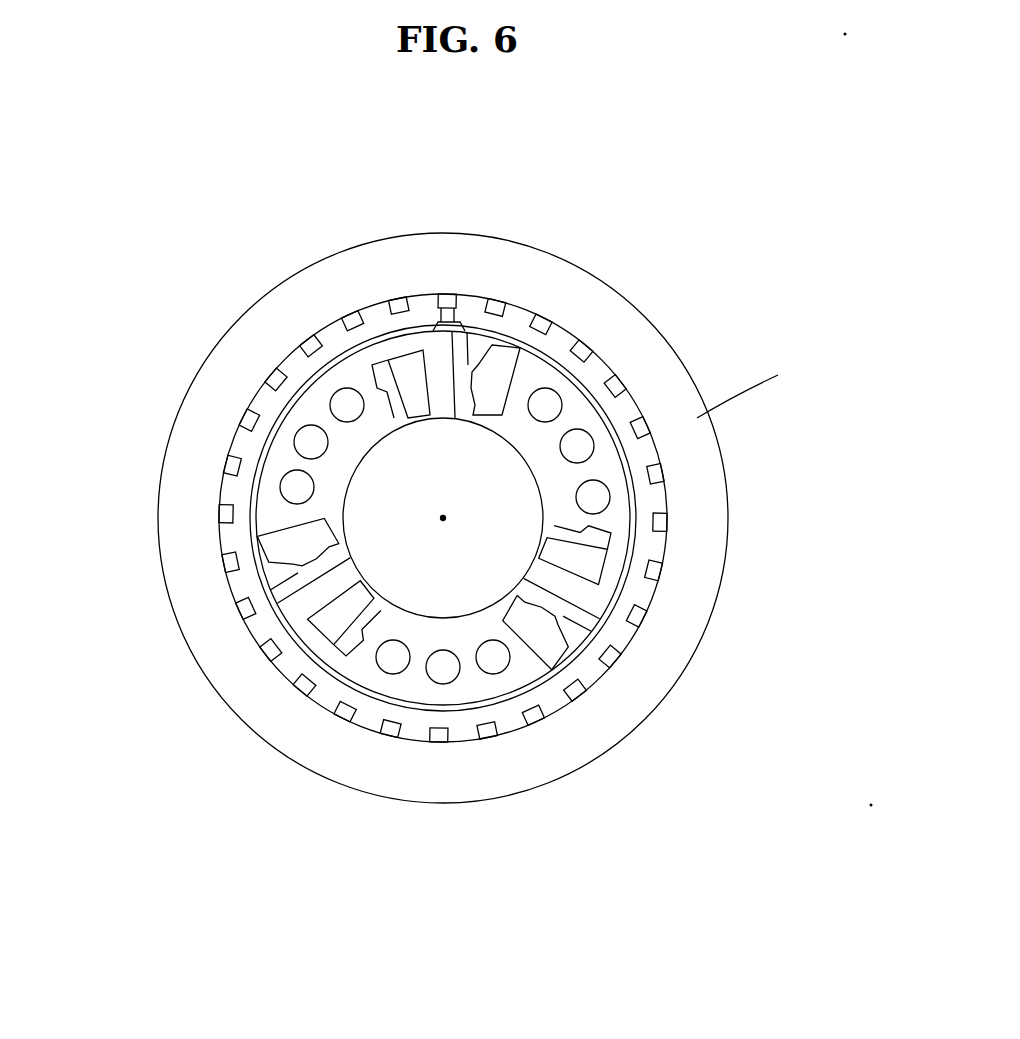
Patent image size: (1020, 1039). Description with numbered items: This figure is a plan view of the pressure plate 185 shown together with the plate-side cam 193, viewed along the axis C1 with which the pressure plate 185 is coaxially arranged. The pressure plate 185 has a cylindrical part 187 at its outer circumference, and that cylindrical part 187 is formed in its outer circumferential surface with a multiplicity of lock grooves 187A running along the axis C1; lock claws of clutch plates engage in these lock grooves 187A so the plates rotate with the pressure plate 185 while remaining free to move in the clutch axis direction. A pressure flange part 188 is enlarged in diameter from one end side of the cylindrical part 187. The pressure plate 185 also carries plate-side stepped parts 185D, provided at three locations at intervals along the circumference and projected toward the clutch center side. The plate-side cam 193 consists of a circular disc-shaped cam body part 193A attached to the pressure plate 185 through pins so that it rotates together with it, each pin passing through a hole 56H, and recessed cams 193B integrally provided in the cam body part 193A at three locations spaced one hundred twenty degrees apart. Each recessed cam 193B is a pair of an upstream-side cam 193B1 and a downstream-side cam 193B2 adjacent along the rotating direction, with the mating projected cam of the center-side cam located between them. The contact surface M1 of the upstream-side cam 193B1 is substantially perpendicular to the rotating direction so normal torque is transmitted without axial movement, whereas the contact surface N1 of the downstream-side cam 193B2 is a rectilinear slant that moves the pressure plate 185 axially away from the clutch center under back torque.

The pressure plate 185 is at (706, 376).
The plate-side stepped parts 185D is at (658, 547).
The cylindrical part 187 is at (667, 485).
The lock grooves 187A is at (658, 525).
The pressure flange part 188 is at (760, 388).
The plate-side cam 193 is at (573, 362).
The cam body part 193A is at (543, 373).
The recessed cams 193B is at (456, 441).
The upstream-side cam 193B1 is at (405, 365).
The downstream-side cam 193B2 is at (505, 360).
The hole 56H is at (560, 398).
The contact surface M1 is at (431, 424).
The contact surface N1 is at (467, 424).
The axis C1 is at (444, 516).